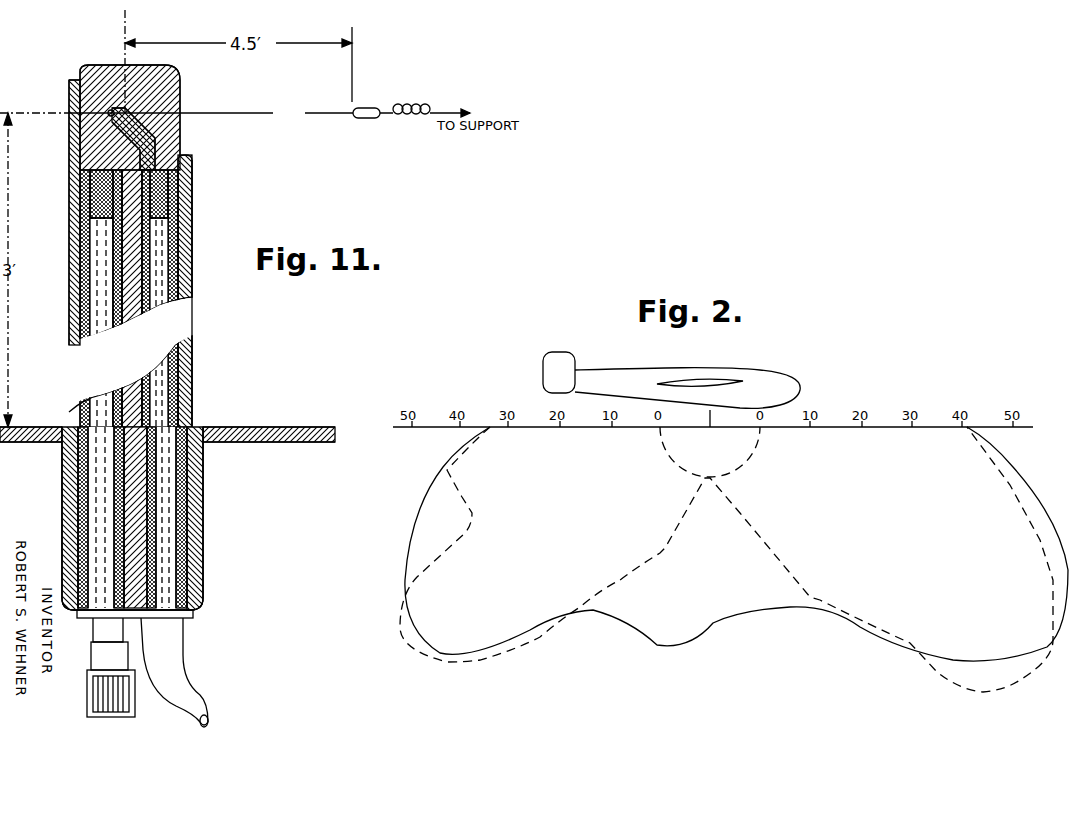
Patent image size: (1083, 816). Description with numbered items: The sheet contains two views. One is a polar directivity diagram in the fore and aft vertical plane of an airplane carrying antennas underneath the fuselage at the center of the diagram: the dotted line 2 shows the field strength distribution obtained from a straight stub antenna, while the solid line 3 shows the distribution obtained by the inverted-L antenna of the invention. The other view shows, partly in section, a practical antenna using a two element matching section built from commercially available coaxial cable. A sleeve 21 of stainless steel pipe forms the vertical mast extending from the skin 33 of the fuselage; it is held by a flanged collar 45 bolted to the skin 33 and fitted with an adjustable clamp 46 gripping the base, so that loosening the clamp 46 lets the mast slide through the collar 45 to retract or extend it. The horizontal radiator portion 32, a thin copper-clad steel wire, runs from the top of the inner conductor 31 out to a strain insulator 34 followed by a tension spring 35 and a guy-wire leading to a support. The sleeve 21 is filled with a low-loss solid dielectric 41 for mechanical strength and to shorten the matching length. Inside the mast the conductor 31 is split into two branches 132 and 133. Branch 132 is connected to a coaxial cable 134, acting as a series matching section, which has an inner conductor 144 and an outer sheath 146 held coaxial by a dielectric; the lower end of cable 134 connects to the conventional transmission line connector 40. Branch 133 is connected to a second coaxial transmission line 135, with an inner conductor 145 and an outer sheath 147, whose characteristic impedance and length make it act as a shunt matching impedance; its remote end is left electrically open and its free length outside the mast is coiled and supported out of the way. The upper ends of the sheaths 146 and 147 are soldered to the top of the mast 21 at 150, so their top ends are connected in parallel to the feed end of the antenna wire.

In FIG. 2, the dotted line 2 is at (745, 517).
In FIG. 2, the solid line 3 is at (860, 633).
In FIG. 11, the sleeve 21 is at (192, 280).
In FIG. 11, the inner conductor 31 is at (165, 103).
In FIG. 11, the horizontal radiator portion 32 is at (242, 113).
In FIG. 11, the skin 33 is at (325, 427).
In FIG. 11, the strain insulator 34 is at (366, 118).
In FIG. 11, the tension spring 35 is at (418, 104).
In FIG. 11, the transmission line connector 40 is at (87, 684).
In FIG. 11, the solid dielectric 41 is at (88, 66).
In FIG. 11, the flanged collar 45 is at (258, 442).
In FIG. 11, the adjustable clamp 46 is at (203, 563).
In FIG. 11, the conductor branch 132 is at (82, 165).
In FIG. 11, the conductor branch 133 is at (192, 158).
In FIG. 11, the coaxial cable 134 is at (100, 242).
In FIG. 11, the coaxial transmission line 135 is at (185, 220).
In FIG. 11, the inner conductor 144 is at (86, 215).
In FIG. 11, the inner conductor 145 is at (178, 186).
In FIG. 11, the outer sheath 146 is at (88, 223).
In FIG. 11, the outer sheath 147 is at (175, 200).
In FIG. 11, the soldered connection 150 is at (129, 298).